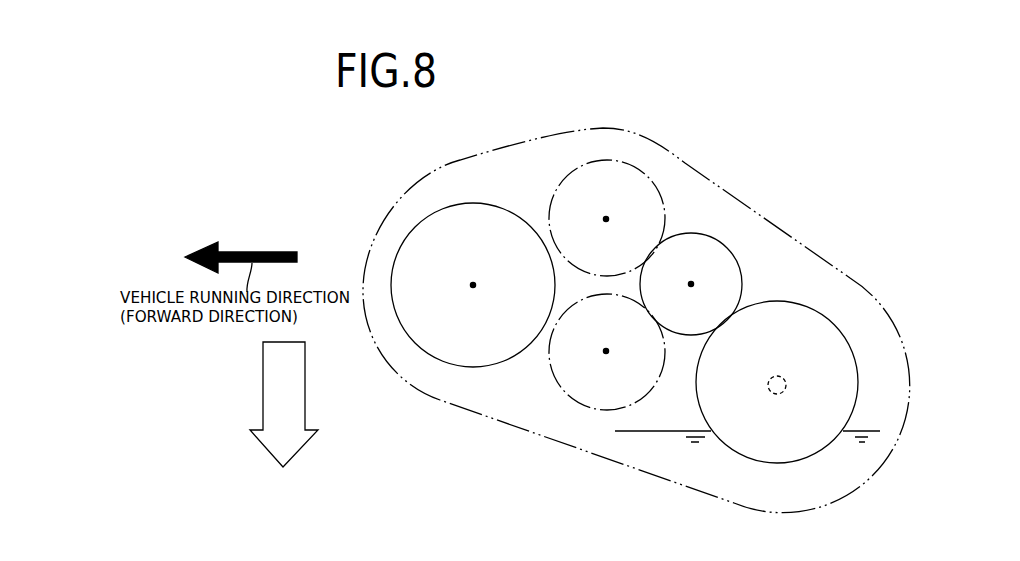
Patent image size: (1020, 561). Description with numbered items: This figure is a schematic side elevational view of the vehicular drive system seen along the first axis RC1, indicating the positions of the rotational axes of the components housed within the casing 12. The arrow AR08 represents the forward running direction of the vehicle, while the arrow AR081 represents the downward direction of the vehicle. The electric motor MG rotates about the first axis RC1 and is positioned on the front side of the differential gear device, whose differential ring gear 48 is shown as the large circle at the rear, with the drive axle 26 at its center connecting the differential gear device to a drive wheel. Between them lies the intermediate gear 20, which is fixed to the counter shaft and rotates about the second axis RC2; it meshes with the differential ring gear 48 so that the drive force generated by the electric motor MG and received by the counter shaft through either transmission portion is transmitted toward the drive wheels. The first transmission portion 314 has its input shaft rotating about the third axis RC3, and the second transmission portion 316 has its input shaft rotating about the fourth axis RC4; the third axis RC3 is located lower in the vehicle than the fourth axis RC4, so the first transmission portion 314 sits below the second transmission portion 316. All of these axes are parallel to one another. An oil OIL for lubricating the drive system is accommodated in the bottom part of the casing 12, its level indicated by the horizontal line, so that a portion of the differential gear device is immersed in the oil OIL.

The casing 12 is at (685, 163).
The intermediate gear 20 is at (727, 246).
The differential ring gear 48 is at (838, 330).
The drive axle 26 is at (786, 391).
The first transmission portion 314 is at (550, 380).
The second transmission portion 316 is at (549, 190).
The electric motor MG is at (432, 215).
The first axis RC1 is at (473, 286).
The second axis RC2 is at (691, 284).
The third axis RC3 is at (606, 351).
The fourth axis RC4 is at (606, 219).
The oil OIL is at (648, 424).
The arrow AR08 is at (285, 252).
The arrow AR081 is at (263, 416).